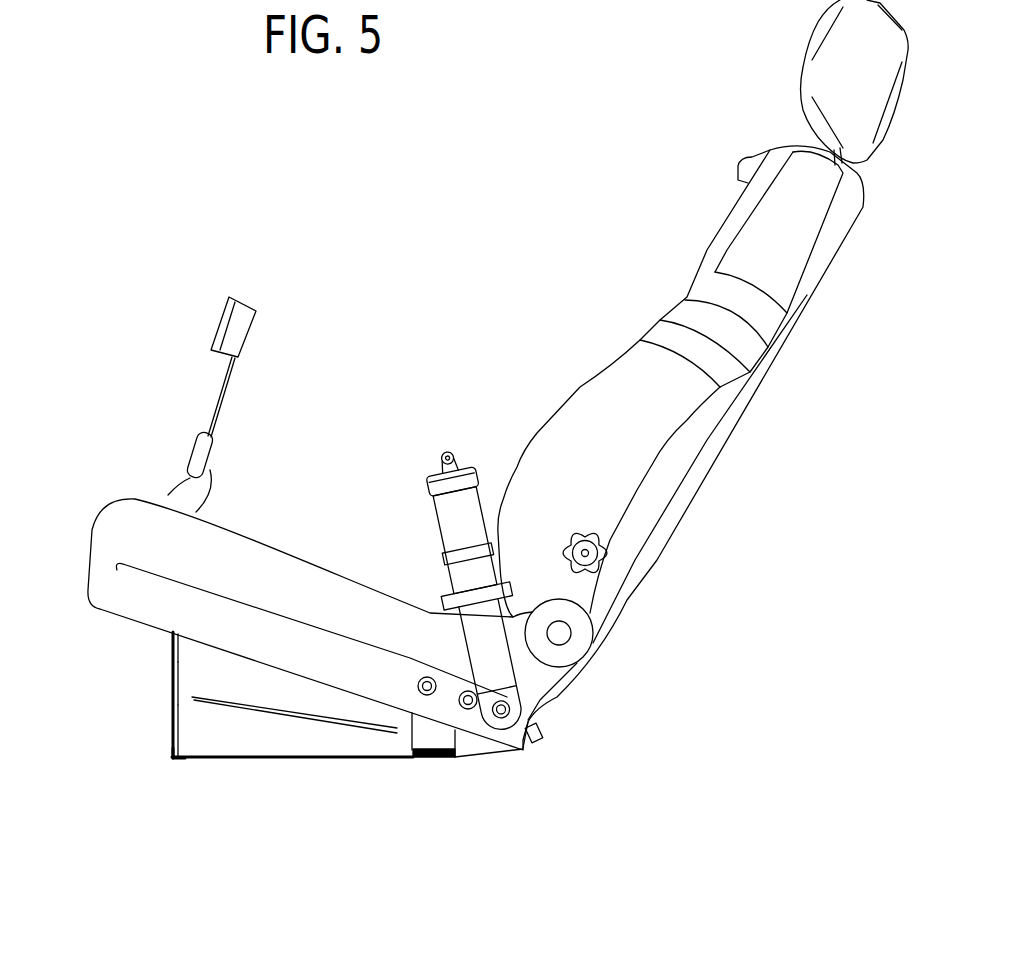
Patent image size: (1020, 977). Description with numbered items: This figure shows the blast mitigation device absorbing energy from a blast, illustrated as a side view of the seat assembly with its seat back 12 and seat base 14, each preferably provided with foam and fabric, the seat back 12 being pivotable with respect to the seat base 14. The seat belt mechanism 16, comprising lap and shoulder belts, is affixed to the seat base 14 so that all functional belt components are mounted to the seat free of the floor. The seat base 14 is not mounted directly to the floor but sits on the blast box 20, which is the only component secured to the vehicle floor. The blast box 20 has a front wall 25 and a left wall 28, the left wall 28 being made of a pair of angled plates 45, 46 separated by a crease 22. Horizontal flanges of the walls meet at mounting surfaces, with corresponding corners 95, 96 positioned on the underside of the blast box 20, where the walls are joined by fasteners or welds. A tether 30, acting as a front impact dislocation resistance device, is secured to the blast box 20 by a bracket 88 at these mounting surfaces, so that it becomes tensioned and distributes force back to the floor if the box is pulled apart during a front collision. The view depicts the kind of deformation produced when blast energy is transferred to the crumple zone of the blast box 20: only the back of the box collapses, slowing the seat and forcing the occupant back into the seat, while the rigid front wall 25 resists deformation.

The seat back 12 is at (694, 478).
The seat base 14 is at (238, 620).
The seat belt mechanism 16 is at (474, 468).
The blast box 20 is at (140, 754).
The crease 22 is at (337, 725).
The front wall 25 is at (170, 650).
The left wall 28 is at (220, 745).
The tether 30 is at (437, 737).
The angled plate 45 is at (193, 675).
The angled plate 46 is at (190, 727).
The bracket 88 is at (410, 757).
The corner 95 is at (164, 767).
The corner 96 is at (456, 768).